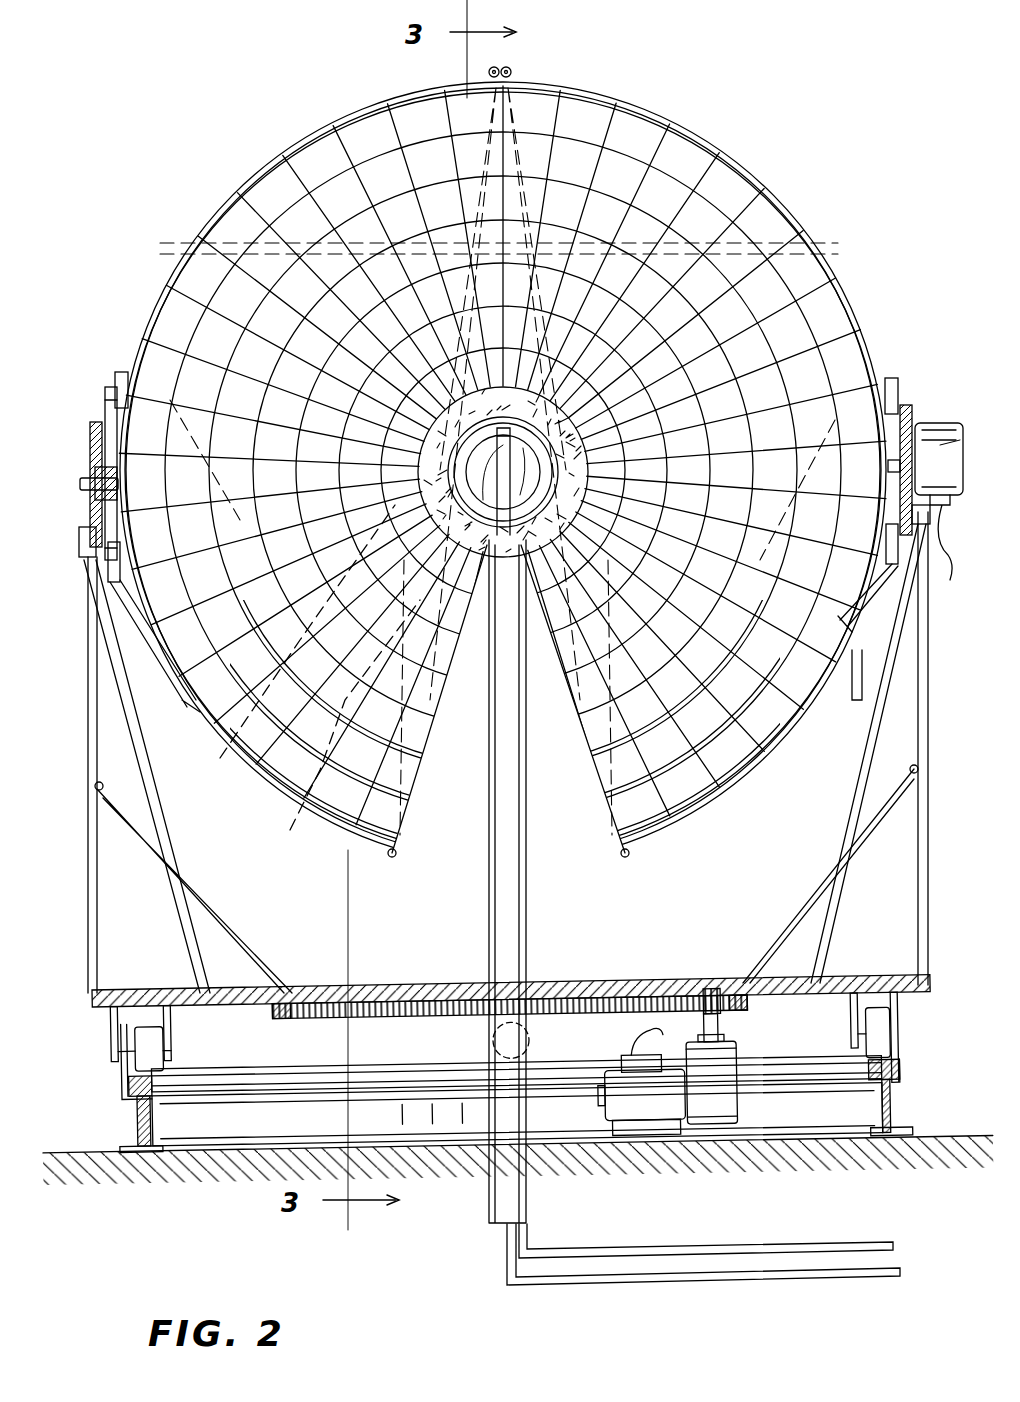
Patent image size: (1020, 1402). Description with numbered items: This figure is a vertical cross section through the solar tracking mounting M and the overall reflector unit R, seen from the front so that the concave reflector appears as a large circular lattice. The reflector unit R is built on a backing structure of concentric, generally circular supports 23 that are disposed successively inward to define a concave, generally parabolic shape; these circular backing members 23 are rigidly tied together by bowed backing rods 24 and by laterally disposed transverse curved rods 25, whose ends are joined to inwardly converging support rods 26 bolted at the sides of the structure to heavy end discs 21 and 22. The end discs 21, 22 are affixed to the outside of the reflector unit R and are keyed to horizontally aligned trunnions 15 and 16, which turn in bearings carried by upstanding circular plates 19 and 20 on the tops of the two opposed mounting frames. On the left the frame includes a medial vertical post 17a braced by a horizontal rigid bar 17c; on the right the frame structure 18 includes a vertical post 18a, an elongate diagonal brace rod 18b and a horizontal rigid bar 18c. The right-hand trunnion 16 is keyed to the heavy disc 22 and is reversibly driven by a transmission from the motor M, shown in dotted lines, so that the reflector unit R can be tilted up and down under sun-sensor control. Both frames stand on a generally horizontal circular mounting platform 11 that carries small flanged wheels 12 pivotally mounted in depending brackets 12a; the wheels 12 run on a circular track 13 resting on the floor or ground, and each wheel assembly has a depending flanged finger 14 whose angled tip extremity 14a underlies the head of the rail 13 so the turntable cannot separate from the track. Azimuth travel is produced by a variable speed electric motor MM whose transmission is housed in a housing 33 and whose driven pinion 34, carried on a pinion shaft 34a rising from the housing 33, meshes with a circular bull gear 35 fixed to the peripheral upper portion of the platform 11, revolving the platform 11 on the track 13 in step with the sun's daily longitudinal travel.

The reflector unit R is at (226, 171).
The mounting platform 11 is at (900, 985).
The flanged wheels 12 is at (162, 1058).
The depending brackets 12a is at (170, 1030).
The circular track 13 is at (272, 1092).
The flanged finger 14 is at (120, 1080).
The angled tip extremity 14a is at (136, 1112).
The trunnion 15 is at (82, 490).
The trunnion 16 is at (888, 466).
The vertical post 17a is at (96, 712).
The horizontal rigid bar 17c is at (96, 793).
The frame structure 18 is at (916, 740).
The vertical post 18a is at (928, 745).
The diagonal brace rod 18b is at (832, 848).
The horizontal rigid bar 18c is at (910, 776).
The circular plate 19 is at (93, 450).
The circular plate 20 is at (925, 428).
The motor M is at (950, 445).
The end disc 21 is at (104, 400).
The end disc 22 is at (910, 400).
The circular supports 23 is at (285, 835).
The bowed backing rods 24 is at (470, 150).
The transverse curved rods 25 is at (220, 760).
The support rods 26 is at (122, 368).
The transmission housing 33 is at (735, 1120).
The driven pinion 34 is at (712, 1004).
The pinion shaft 34a is at (705, 1020).
The bull gear 35 is at (300, 1010).
The variable speed electric motor MM is at (641, 1082).